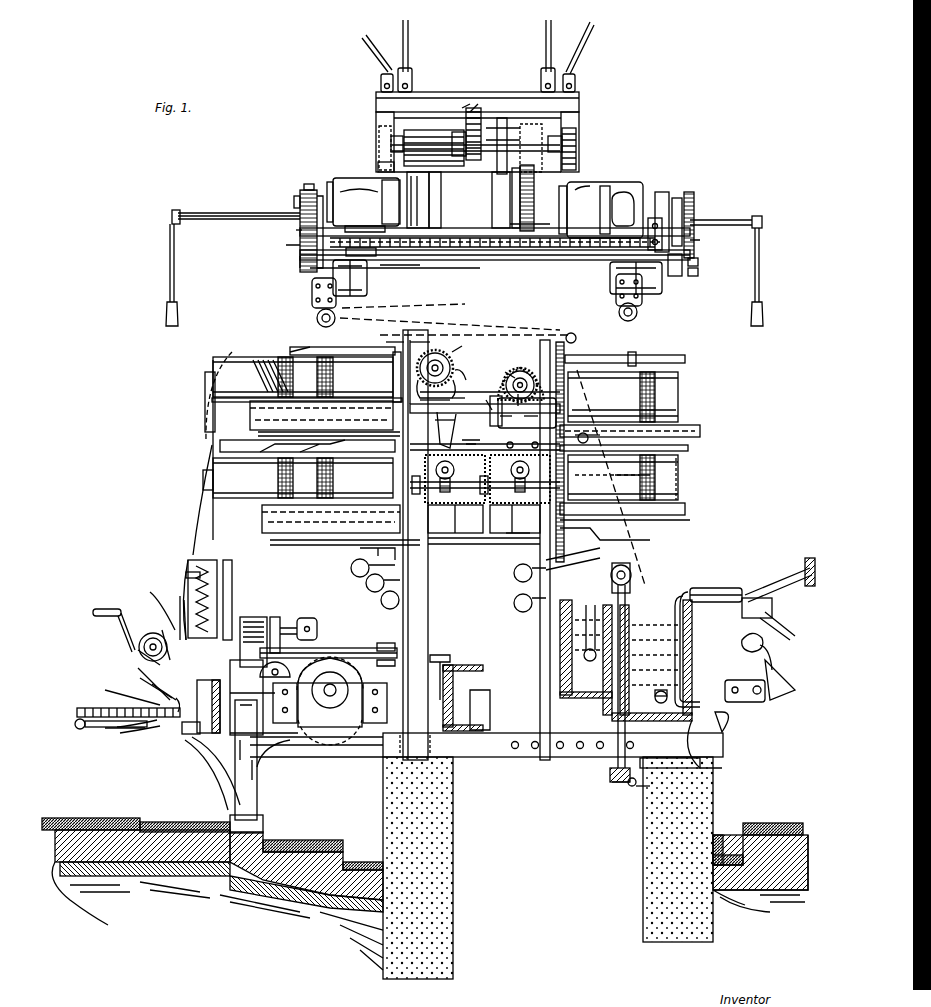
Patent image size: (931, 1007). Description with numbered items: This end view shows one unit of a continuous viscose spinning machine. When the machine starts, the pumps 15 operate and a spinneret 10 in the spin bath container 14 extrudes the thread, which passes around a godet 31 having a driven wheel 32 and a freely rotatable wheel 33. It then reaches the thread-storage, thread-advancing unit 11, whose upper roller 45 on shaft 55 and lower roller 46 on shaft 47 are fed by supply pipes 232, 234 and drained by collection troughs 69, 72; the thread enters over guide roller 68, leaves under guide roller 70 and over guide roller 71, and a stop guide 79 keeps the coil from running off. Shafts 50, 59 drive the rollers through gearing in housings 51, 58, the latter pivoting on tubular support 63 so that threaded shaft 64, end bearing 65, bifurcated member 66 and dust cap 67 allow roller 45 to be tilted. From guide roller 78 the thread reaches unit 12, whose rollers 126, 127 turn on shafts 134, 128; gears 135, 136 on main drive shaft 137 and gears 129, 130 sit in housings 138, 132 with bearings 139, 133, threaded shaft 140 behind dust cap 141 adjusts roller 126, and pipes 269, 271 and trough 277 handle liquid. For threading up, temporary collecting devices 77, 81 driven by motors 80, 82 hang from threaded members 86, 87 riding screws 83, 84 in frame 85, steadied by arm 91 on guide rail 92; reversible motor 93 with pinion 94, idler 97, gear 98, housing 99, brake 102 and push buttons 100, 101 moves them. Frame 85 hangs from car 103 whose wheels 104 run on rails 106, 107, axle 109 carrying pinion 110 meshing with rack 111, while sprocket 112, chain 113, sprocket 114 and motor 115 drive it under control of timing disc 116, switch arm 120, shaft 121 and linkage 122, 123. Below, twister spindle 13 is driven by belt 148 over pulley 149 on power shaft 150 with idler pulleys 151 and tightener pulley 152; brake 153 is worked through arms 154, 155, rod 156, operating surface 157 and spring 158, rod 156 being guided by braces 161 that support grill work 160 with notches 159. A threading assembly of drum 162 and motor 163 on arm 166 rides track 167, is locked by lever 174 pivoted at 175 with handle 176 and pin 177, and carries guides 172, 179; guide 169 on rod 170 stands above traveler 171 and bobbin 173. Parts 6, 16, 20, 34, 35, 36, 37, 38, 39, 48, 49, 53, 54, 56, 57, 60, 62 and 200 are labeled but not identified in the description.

The section line 6 is at (286, 242).
The spinneret 10 is at (656, 690).
The thread-storage, thread-advancing device 11 is at (678, 384).
The thread-storage, thread-advancing device 12 is at (232, 356).
The twisting spindle 13 is at (192, 558).
The spin bath container 14 is at (712, 760).
The pumps 15 is at (770, 652).
The bar 16 is at (722, 588).
The block 20 is at (762, 702).
The godet 31 is at (635, 578).
The driven wheel 32 is at (622, 560).
The freely rotatable wheel 33 is at (645, 600).
The pulley 34 is at (600, 612).
The tank 35 is at (560, 672).
The block 36 is at (610, 770).
The plate 37 is at (618, 782).
The nut 38 is at (634, 786).
The bolt 39 is at (636, 782).
The upper roller 45 is at (680, 404).
The lower roller 46 is at (680, 488).
The shaft 47 is at (485, 487).
The housing 48 is at (523, 517).
The gear 49 is at (520, 470).
The shaft 50 is at (512, 480).
The housing 51 is at (518, 525).
The housing 53 is at (515, 517).
The roller 54 is at (556, 540).
The shaft 55 is at (500, 392).
The bearing 56 is at (535, 418).
The bearing 57 is at (510, 418).
The housing 58 is at (492, 404).
The shaft 59 is at (523, 372).
The gear housing 60 is at (536, 378).
The hub 62 is at (512, 370).
The tubular support 63 is at (526, 368).
The threaded shaft 64 is at (576, 470).
The pivoted end bearing 65 is at (507, 437).
The bifurcated member 66 is at (545, 437).
The removable dust cap 67 is at (580, 430).
The guide roller 68 is at (588, 432).
The collection trough 69 is at (686, 426).
The guide roller 70 is at (680, 462).
The guide roller 71 is at (574, 332).
The collection trough 72 is at (680, 510).
The temporary collecting device 77 is at (640, 316).
The guide roller 78 is at (392, 340).
The stop guide 79 is at (690, 448).
The motor 80 is at (664, 288).
The temporary collecting device 81 is at (318, 318).
The motor 82 is at (356, 284).
The threaded screw 83 is at (586, 252).
The threaded screw 84 is at (436, 256).
The rectangular frame 85 is at (696, 236).
The interiorly threaded member 86 is at (668, 204).
The interiorly threaded member 87 is at (410, 268).
The arm 91 is at (360, 262).
The guide rail 92 is at (486, 252).
The reversible motor 93 is at (363, 205).
The pinion 94 is at (312, 190).
The idler gear 97 is at (300, 232).
The gear 98 is at (302, 260).
The dust-proof housing 99 is at (300, 200).
The push button 100 is at (698, 262).
The push button 101 is at (698, 270).
The magnetic brake 102 is at (394, 168).
The car 103 is at (410, 130).
The flanged wheels 104 is at (391, 144).
The rail 106 is at (380, 132).
The rail 107 is at (579, 128).
The axle 109 is at (462, 166).
The pinion 110 is at (480, 168).
The rack 111 is at (474, 108).
The sprocket 112 is at (520, 128).
The chain 113 is at (540, 178).
The sprocket 114 is at (548, 250).
The motor 115 is at (628, 182).
The timing disc 116 is at (505, 180).
The switch arm 120 is at (176, 212).
The long shaft 121 is at (232, 214).
The linkage 122 is at (528, 200).
The linkage 123 is at (520, 178).
The upper roller 126 is at (250, 358).
The lower roller 127 is at (258, 524).
The shaft 128 is at (455, 519).
The driving gear 129 is at (458, 481).
The gear 130 is at (448, 468).
The housing 132 is at (468, 536).
The bearing 133 is at (470, 519).
The drive shaft 134 is at (416, 342).
The gear 135 is at (435, 395).
The gear 136 is at (470, 344).
The main drive shaft 137 is at (450, 352).
The housing 138 is at (458, 376).
The bearing 139 is at (462, 392).
The threaded shaft 140 is at (470, 440).
The dust cap 141 is at (452, 426).
The belt 148 is at (312, 642).
The cylindrical pulley 149 is at (332, 648).
The power shaft 150 is at (330, 695).
The idler pulleys 151 is at (384, 644).
The belt tightener pulley 152 is at (282, 630).
The brake 153 is at (260, 660).
The depending arm 154 is at (206, 706).
The upwardly extending arm 155 is at (198, 732).
The rod 156 is at (116, 732).
The curved operating surface 157 is at (80, 730).
The spring 158 is at (165, 736).
The notched-out portions 159 is at (100, 712).
The grill work 160 is at (105, 690).
The braces 161 is at (200, 770).
The temporary collecting drum 162 is at (156, 630).
The electric motor 163 is at (140, 678).
The arm 166 is at (152, 684).
The track 167 is at (180, 596).
The thread guide 169 is at (196, 520).
The rod 170 is at (232, 590).
The twister traveler 171 is at (174, 616).
The guide 172 is at (150, 592).
The twister bobbin 173 is at (186, 574).
The lever 174 is at (138, 650).
The pivot 175 is at (138, 668).
The operating handle 176 is at (112, 610).
The pin 177 is at (176, 702).
The wire guide 179 is at (148, 640).
The hub 200 is at (436, 348).
The supply pipe 232 is at (640, 366).
The supply pipe 234 is at (632, 467).
The liquid supply pipe 269 is at (345, 346).
The liquid supply pipe 271 is at (307, 441).
The liquid collecting trough 277 is at (272, 536).